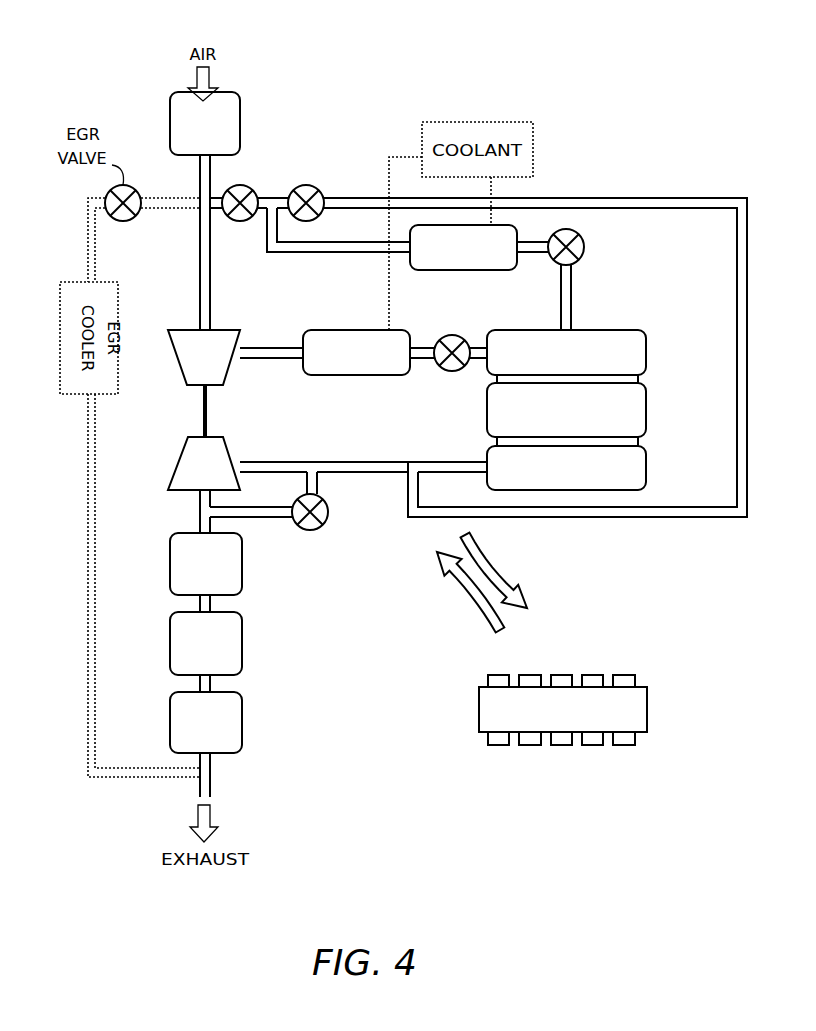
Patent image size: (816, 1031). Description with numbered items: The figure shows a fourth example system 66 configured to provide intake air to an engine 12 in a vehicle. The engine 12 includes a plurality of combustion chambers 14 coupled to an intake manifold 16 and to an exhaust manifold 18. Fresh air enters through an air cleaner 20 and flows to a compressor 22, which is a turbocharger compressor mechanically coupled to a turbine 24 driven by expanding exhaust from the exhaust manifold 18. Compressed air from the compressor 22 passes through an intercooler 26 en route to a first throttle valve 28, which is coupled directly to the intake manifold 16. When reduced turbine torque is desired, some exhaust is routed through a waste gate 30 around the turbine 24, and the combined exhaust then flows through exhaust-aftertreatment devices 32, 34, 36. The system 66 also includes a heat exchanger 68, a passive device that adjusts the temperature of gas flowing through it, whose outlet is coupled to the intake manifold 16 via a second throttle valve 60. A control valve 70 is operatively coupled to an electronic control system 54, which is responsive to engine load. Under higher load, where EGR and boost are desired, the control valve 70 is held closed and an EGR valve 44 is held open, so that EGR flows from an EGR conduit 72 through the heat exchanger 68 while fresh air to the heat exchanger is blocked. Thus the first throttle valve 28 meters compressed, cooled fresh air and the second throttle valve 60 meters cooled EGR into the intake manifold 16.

The engine 12 is at (601, 410).
The combustion chambers 14 is at (566, 410).
The intake manifold 16 is at (566, 352).
The exhaust manifold 18 is at (566, 468).
The air cleaner 20 is at (205, 123).
The compressor 22 is at (204, 357).
The turbine 24 is at (204, 463).
The intercooler 26 is at (356, 352).
The first throttle valve 28 is at (452, 335).
The waste gate 30 is at (327, 518).
The exhaust-aftertreatment device 32 is at (206, 564).
The exhaust-aftertreatment device 34 is at (206, 643).
The exhaust-aftertreatment device 36 is at (206, 722).
The EGR valve 44 is at (303, 185).
The electronic control system 54 is at (563, 710).
The second throttle valve 60 is at (585, 247).
The fourth example system 66 is at (386, 37).
The heat exchanger 68 is at (463, 247).
The control valve 70 is at (240, 185).
The EGR conduit 72 is at (737, 247).